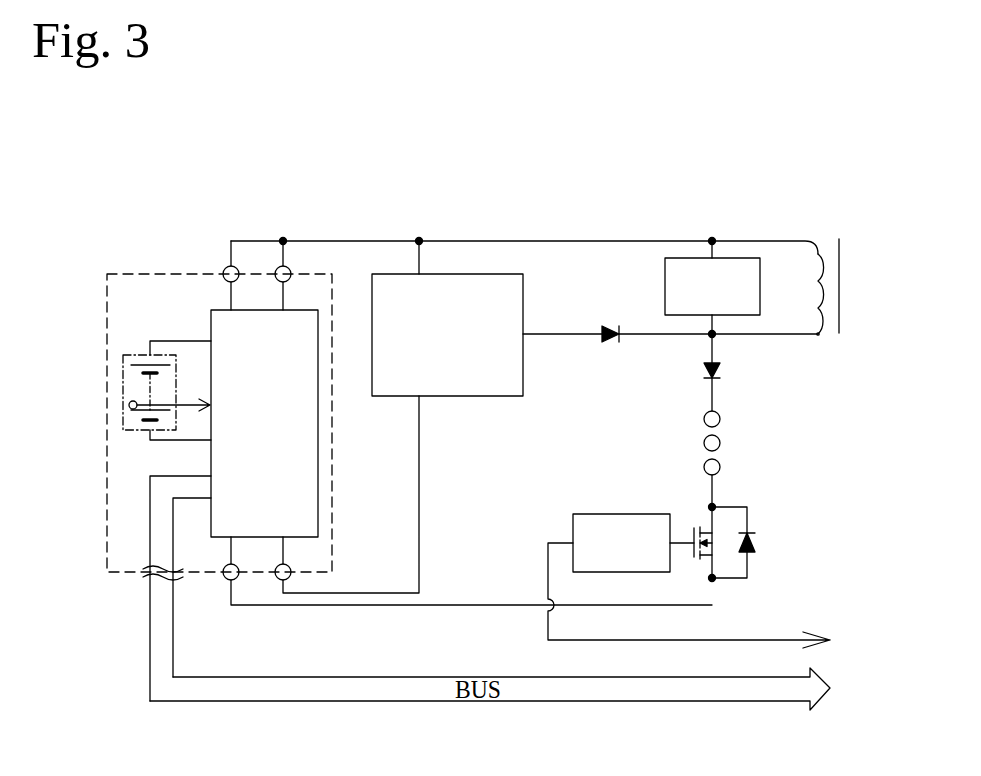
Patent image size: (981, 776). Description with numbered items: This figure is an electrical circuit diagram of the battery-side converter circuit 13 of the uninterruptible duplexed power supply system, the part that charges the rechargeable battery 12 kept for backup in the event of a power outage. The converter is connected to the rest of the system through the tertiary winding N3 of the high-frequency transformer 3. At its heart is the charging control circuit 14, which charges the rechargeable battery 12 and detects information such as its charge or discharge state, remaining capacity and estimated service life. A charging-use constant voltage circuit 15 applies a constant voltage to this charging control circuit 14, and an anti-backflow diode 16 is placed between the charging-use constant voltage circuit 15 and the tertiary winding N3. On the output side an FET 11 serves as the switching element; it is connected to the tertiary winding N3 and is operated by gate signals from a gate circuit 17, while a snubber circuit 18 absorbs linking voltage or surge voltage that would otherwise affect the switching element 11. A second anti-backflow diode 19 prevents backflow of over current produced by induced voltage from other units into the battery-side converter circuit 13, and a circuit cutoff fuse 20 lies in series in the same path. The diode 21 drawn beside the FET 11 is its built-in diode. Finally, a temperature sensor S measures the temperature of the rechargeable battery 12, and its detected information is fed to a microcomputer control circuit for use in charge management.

The high-frequency transformer 3 is at (839, 263).
The FET (switching element) 11 is at (690, 498).
The rechargeable battery 12 is at (137, 353).
The battery-side converter circuit 13 is at (646, 218).
The charging control circuit 14 is at (258, 537).
The charging-use constant voltage circuit 15 is at (393, 396).
The anti-backflow diode 16 is at (613, 327).
The gate circuit 17 is at (590, 514).
The snubber circuit 18 is at (745, 258).
The anti-backflow diode 19 is at (694, 376).
The circuit cutoff fuse 20 is at (721, 446).
The built-in diode 21 is at (758, 545).
The tertiary winding N3 is at (818, 336).
The temperature sensor S is at (129, 405).